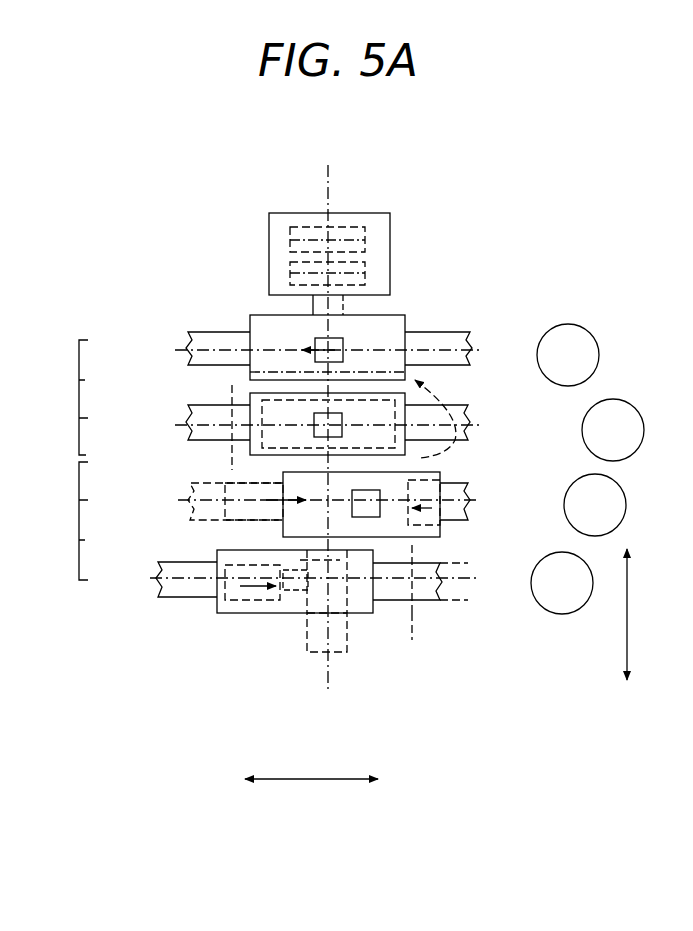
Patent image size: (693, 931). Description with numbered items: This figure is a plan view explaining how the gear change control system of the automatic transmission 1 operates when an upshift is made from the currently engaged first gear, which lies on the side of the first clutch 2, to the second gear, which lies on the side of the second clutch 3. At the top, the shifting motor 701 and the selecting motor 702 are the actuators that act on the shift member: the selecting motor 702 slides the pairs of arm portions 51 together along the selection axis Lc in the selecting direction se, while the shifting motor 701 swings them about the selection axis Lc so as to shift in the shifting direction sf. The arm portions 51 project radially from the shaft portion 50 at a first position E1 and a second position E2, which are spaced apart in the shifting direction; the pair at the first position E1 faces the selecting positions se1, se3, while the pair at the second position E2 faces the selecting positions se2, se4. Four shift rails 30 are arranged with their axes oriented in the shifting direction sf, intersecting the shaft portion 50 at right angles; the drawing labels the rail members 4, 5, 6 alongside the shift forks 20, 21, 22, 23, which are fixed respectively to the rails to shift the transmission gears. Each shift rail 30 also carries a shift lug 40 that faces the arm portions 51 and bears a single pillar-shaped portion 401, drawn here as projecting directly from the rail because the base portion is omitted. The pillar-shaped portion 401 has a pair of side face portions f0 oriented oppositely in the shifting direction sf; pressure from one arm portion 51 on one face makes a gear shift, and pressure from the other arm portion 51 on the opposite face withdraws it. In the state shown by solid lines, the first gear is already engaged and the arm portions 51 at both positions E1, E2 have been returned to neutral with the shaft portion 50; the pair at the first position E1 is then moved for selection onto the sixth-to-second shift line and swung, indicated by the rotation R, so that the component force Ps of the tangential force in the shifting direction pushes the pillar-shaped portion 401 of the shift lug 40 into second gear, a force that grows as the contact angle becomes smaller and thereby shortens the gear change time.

The shifting motor 701 is at (366, 236).
The selecting motor 702 is at (372, 274).
The shift rail 30 is at (452, 332).
The shaft 5 is at (333, 342).
The shift fork 23 is at (535, 352).
The rotation direction R is at (455, 419).
The shaft 4 is at (171, 421).
The shift fork 22 is at (580, 428).
The shaft 6 is at (162, 503).
The first clutch 2 is at (402, 503).
The shift fork 20 is at (562, 505).
The shift lug 40 is at (365, 613).
The automatic transmission 1 is at (313, 576).
The side face portion f0 is at (276, 575).
The second clutch 3 is at (432, 570).
The shift fork 21 is at (530, 584).
The shaft portion 50 is at (306, 632).
The arm portion 51 is at (232, 396).
The pillar-shaped portion 401 is at (310, 480).
The component force Ps is at (250, 480).
The selection axis Lc is at (334, 196).
The selecting direction se is at (627, 630).
The shifting direction sf is at (303, 779).
The second position E2 is at (76, 366).
The first position E1 is at (78, 560).
The selecting position se4 is at (109, 344).
The selecting position se2 is at (109, 419).
The selecting position se3 is at (109, 500).
The selecting position se1 is at (109, 580).